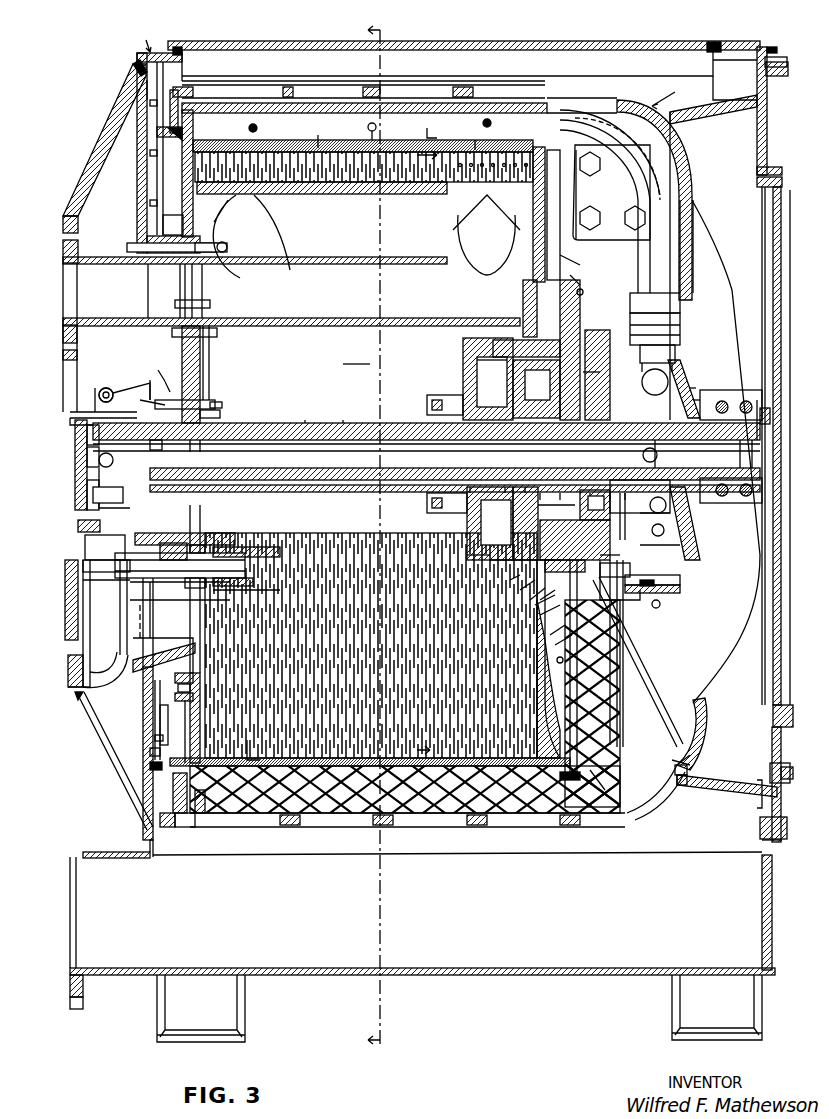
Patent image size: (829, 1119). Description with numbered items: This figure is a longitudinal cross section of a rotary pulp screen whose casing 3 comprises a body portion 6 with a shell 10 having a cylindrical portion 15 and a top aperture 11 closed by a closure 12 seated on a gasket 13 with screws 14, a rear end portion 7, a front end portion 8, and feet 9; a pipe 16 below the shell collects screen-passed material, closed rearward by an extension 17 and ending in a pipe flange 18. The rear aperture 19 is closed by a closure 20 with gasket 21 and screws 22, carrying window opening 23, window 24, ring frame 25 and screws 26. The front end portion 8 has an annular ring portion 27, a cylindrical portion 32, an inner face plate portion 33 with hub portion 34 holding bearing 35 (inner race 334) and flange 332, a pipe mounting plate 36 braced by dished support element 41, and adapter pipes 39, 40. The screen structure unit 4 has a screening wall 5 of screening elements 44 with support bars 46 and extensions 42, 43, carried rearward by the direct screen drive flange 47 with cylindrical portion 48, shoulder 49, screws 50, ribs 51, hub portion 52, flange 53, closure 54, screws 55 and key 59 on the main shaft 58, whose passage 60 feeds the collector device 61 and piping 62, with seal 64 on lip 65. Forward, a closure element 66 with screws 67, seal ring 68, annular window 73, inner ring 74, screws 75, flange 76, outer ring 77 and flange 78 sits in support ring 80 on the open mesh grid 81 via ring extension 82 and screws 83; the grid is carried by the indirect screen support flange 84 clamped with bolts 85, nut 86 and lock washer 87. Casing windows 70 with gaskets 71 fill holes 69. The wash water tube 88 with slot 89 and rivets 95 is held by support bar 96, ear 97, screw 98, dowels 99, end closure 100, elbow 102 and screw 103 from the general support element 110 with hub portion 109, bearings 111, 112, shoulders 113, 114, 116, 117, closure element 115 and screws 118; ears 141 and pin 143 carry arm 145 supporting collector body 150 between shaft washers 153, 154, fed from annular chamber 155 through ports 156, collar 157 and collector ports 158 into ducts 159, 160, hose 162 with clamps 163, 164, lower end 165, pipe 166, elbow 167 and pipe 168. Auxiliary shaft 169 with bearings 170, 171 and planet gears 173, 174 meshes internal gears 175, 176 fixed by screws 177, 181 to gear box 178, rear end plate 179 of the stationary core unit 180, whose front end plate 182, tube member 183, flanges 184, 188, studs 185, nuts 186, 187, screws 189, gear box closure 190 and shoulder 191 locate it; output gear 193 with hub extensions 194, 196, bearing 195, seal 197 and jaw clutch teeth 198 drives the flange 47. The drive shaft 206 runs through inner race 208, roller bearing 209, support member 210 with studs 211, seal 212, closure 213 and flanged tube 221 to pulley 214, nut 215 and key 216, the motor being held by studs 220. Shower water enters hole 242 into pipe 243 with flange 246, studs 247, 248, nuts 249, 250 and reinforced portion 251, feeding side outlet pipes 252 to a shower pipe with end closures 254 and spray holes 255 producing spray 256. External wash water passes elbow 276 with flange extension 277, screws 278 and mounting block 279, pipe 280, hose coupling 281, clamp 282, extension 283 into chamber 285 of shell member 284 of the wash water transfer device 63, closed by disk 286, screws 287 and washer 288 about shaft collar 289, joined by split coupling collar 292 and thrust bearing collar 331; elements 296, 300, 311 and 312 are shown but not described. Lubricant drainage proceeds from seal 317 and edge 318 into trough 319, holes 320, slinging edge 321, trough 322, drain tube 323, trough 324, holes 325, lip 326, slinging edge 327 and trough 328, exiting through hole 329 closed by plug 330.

The casing 3 is at (145, 37).
The screen structure unit 4 is at (515, 540).
The cylindrical screening wall 5 is at (342, 439).
The body portion 6 is at (762, 45).
The rear end portion 7 is at (772, 58).
The front end portion 8 is at (140, 58).
The external feet 9 is at (245, 1004).
The shell 10 is at (748, 44).
The aperture 11 is at (707, 50).
The closure 12 is at (426, 44).
The gasket 13 is at (186, 56).
The screws 14 is at (178, 49).
The cylindrical portion 15 is at (771, 48).
The pipe 16 is at (135, 976).
The extension 17 is at (775, 888).
The pipe flange 18 is at (78, 1006).
The aperture 19 is at (742, 92).
The closure 20 is at (774, 150).
The gasket 21 is at (780, 838).
The screws 22 is at (787, 70).
The window opening 23 is at (757, 197).
The window 24 is at (782, 212).
The ring frame 25 is at (782, 170).
The screws 26 is at (784, 181).
The annular ring portion 27 is at (137, 172).
The cylindrical portion 32 is at (158, 216).
The inner face plate portion 33 is at (182, 353).
The cylindrical hub portion 34 is at (165, 380).
The anti-friction bearing 35 is at (226, 445).
The pipe mounting plate 36 is at (63, 230).
The internal shower supply adapter pipe 39 is at (112, 266).
The pneumatic screen interior pressurizing adapter pipe 40 is at (164, 657).
The conically dished support element 41 is at (112, 110).
The annular rear extension 42 is at (540, 745).
The front annular extension 43 is at (205, 815).
The screening elements 44 is at (306, 160).
The support bars 46 is at (377, 136).
The direct screen drive flange 47 is at (640, 690).
The cylindrical portion 48 is at (570, 740).
The shoulder 49 is at (570, 779).
The screws 50 is at (600, 774).
The integral ribs 51 is at (580, 176).
The hub portion 52 is at (578, 280).
The inwardly extending flange 53 is at (563, 501).
The closure 54 is at (606, 506).
The screws 55 is at (556, 509).
The main shaft 58 is at (343, 422).
The key 59 is at (590, 492).
The central passage 60 is at (342, 486).
The wash water collector device 61 is at (686, 376).
The stationary piping 62 is at (681, 274).
The wash water transfer device 63 is at (72, 419).
The seal 64 is at (545, 614).
The lip 65 is at (540, 603).
The closure element 66 is at (210, 728).
The screws 67 is at (145, 786).
The seal ring 68 is at (196, 678).
The window holes 69 is at (152, 715).
The windows 70 is at (156, 740).
The gaskets 71 is at (152, 768).
The annular window 73 is at (200, 740).
The inner ring element 74 is at (192, 690).
The screws 75 is at (195, 700).
The radial flange portion 76 is at (162, 712).
The outer ring 77 is at (158, 138).
The radial flange 78 is at (160, 128).
The support ring 80 is at (136, 70).
The open mesh support grid 81 is at (262, 86).
The ring extension 82 is at (186, 828).
The screws 83 is at (168, 828).
The indirect screen support flange 84 is at (650, 101).
The bolts 85 is at (748, 402).
The retaining nut 86 is at (771, 415).
The lock washer 87 is at (766, 406).
The wash water emitting tube 88 is at (508, 102).
The elongated slot 89 is at (318, 140).
The stay rivets 95 is at (258, 128).
The support bar 96 is at (612, 112).
The ear 97 is at (146, 90).
The screw 98 is at (181, 130).
The dowels 99 is at (179, 106).
The end closure 100 is at (195, 134).
The 45-degree pipe elbow 102 is at (600, 100).
The screw 103 is at (589, 85).
The hub portion 109 is at (584, 290).
The general support element 110 is at (638, 248).
The antifriction bearing 111 is at (637, 517).
The antifriction bearing 112 is at (676, 505).
The shouldered portion 113 is at (635, 516).
The shouldered portion 114 is at (672, 514).
The closure element 115 is at (694, 400).
The face 116 is at (670, 590).
The shoulder portion 117 is at (654, 586).
The screws 118 is at (675, 580).
The ears 141 is at (686, 556).
The pin 143 is at (665, 531).
The arm 145 is at (684, 547).
The wash water flow collector body member 150 is at (667, 507).
The shaft washer 153 is at (610, 492).
The shaft washer 154 is at (712, 455).
The annular chamber 155 is at (628, 492).
The ports 156 is at (652, 462).
The shaft spacing collar 157 is at (670, 478).
The collector ports 158 is at (692, 388).
The annular duct 159 is at (655, 382).
The exiting duct 160 is at (680, 366).
The flexible hose 162 is at (681, 320).
The hose clamp 163 is at (676, 350).
The hose clamp 164 is at (733, 293).
The lower end 165 is at (682, 298).
The pipe 166 is at (672, 238).
The 45-degree pipe elbow 167 is at (689, 166).
The pipe 168 is at (622, 168).
The auxiliary shaft 169 is at (572, 389).
The antifriction bearing 170 is at (525, 340).
The antifriction bearing 171 is at (600, 352).
The planet gear 173 is at (540, 492).
The planet gear 174 is at (560, 492).
The internal gear 175 is at (492, 558).
The internal gear 176 is at (602, 558).
The screws 177 is at (584, 368).
The gear box 178 is at (463, 372).
The core rear end plate 179 is at (572, 262).
The stationary core unit 180 is at (356, 357).
The screws 181 is at (618, 575).
The front end plate 182 is at (209, 355).
The tube member 183 is at (305, 422).
The front flange 184 is at (208, 398).
The studs 185 is at (222, 406).
The nuts 186 is at (220, 414).
The nuts 187 is at (172, 400).
The rear flange 188 is at (427, 398).
The screws 189 is at (426, 407).
The gear box closure 190 is at (515, 578).
The shouldered portion 191 is at (525, 585).
The output gear 193 is at (480, 380).
The hub extension 194 is at (470, 488).
The antifriction bearing 195 is at (460, 490).
The hub extension 196 is at (505, 488).
The oil retention seal 197 is at (467, 520).
The jaw clutch teeth 198 is at (525, 488).
The drive shaft 206 is at (280, 534).
The inner race 208 is at (232, 592).
The roller bearing 209 is at (232, 600).
The support member 210 is at (218, 543).
The studs 211 is at (232, 588).
The shaft seal 212 is at (150, 608).
The closure 213 is at (150, 630).
The pulley 214 is at (100, 602).
The retaining nut 215 is at (83, 572).
The key 216 is at (85, 560).
The nutted studs 220 is at (232, 545).
The flanged tube 221 is at (252, 545).
The round hole 242 is at (205, 286).
The pipe 243 is at (368, 326).
The flange 246 is at (212, 222).
The studs 247 is at (217, 333).
The stud 248 is at (226, 248).
The nuts 249 is at (200, 262).
The nuts 250 is at (127, 246).
The reinforced portion 251 is at (155, 278).
The side outlet pipes 252 is at (282, 222).
The end closures 254 is at (530, 186).
The spray holes 255 is at (460, 168).
The spray 256 is at (480, 143).
The pipe elbow 276 is at (70, 660).
The flange extension 277 is at (126, 692).
The screws 278 is at (72, 672).
The mounting block 279 is at (140, 650).
The pipe 280 is at (90, 622).
The flexible hose coupling 281 is at (85, 548).
The hose clamp 282 is at (85, 584).
The cylindrical extension 283 is at (80, 522).
The shell member 284 is at (87, 414).
The chamber 285 is at (108, 495).
The disk 286 is at (74, 465).
The screws 287 is at (75, 432).
The washer element 288 is at (75, 446).
The shaft collar 289 is at (80, 493).
The split coupling collar 292 is at (118, 410).
The pin 296 is at (112, 463).
The collar 300 is at (205, 545).
The link 311 is at (95, 400).
The pivot 312 is at (99, 392).
The oil seal ring 317 is at (165, 405).
The sharp edge 318 is at (535, 595).
The annular trough 319 is at (565, 559).
The holes 320 is at (555, 632).
The oil slinging edge 321 is at (618, 598).
The annular trough 322 is at (560, 645).
The drain tube 323 is at (625, 640).
The trough 324 is at (690, 765).
The holes 325 is at (690, 755).
The lip 326 is at (688, 772).
The slinging edge 327 is at (688, 778).
The annular trough 328 is at (712, 801).
The hole 329 is at (780, 765).
The threaded closure 330 is at (791, 775).
The thrust bearing collar 331 is at (168, 450).
The inwardly extending flange 332 is at (190, 452).
The inner race 334 is at (205, 450).